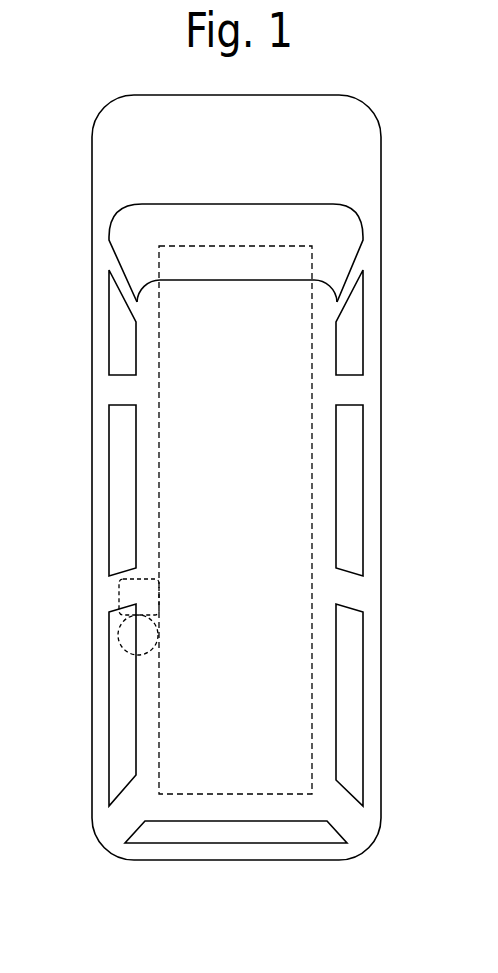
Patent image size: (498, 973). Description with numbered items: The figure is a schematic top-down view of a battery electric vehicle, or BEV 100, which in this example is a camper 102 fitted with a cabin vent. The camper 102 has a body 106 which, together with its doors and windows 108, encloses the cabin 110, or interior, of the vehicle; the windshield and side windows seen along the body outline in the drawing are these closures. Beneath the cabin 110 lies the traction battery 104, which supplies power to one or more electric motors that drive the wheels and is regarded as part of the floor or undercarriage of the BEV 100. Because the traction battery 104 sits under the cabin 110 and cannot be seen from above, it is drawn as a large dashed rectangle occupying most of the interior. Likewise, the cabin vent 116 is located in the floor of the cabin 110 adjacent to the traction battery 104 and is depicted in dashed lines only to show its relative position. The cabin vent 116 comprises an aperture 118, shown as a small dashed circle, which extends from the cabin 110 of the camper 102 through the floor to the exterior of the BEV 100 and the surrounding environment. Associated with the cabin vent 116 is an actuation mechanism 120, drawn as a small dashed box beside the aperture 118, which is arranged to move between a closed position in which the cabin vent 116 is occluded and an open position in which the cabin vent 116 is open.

The battery electric vehicle (BEV) 100 is at (381, 468).
The camper 102 is at (381, 162).
The traction battery 104 is at (312, 530).
The body 106 is at (365, 197).
The side window 108 is at (349, 319).
The cabin 110 is at (336, 238).
The cabin vent 116 is at (122, 627).
The aperture 118 is at (128, 641).
The actuation mechanism 120 is at (120, 597).